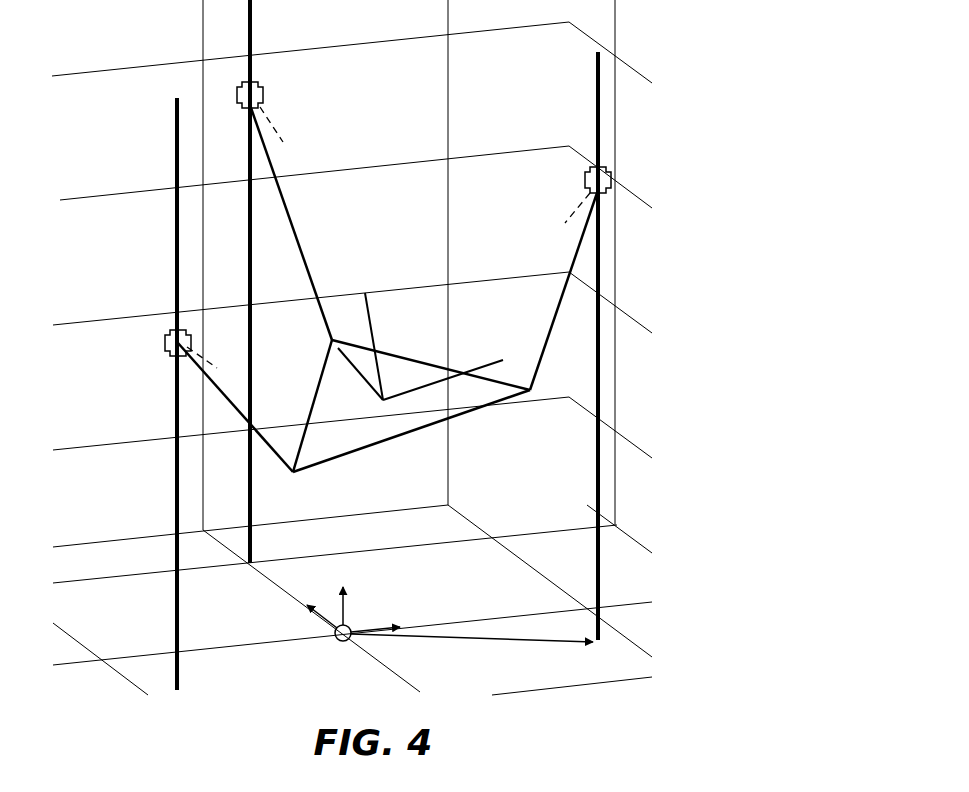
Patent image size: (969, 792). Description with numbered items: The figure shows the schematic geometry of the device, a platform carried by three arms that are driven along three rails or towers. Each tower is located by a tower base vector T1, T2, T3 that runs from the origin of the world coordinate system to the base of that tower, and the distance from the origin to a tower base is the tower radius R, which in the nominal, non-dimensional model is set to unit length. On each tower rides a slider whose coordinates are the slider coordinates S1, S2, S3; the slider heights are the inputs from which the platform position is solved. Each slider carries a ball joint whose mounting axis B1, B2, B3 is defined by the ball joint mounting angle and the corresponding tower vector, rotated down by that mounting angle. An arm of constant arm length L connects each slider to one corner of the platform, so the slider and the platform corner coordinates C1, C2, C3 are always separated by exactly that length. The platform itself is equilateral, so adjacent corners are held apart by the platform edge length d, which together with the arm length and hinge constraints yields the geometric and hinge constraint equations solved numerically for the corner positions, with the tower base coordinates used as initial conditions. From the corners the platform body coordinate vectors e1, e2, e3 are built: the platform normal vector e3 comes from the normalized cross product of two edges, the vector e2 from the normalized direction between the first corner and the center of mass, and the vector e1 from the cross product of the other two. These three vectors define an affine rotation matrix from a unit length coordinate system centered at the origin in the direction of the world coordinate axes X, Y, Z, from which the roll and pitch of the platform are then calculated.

The tower base vector T1 is at (263, 281).
The tower base vector T2 is at (612, 356).
The tower base vector T3 is at (191, 395).
The slider coordinates S1 is at (237, 96).
The slider coordinates S2 is at (609, 175).
The slider coordinates S3 is at (165, 343).
The ball joint mounting axis B1 is at (278, 124).
The ball joint mounting axis B2 is at (564, 204).
The ball joint mounting axis B3 is at (208, 352).
The platform corner coordinates C1 is at (291, 229).
The platform corner coordinates C2 is at (443, 386).
The platform corner coordinates C3 is at (236, 425).
The arm length L is at (564, 290).
The platform edge length d is at (411, 431).
The body coordinate vector e1 is at (443, 369).
The body coordinate vector e2 is at (360, 375).
The body coordinate vector e3 is at (376, 346).
The world coordinate axis X is at (375, 617).
The world coordinate axis Y is at (315, 616).
The world coordinate axis Z is at (343, 594).
The tower radius R is at (472, 629).